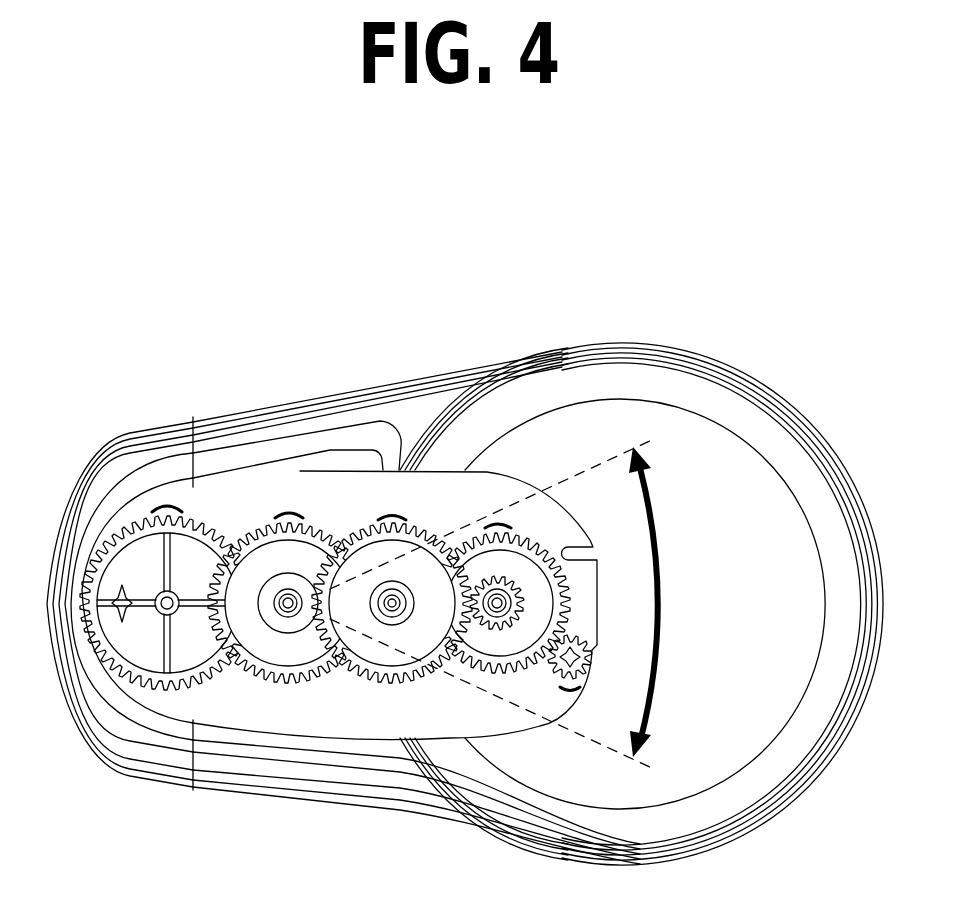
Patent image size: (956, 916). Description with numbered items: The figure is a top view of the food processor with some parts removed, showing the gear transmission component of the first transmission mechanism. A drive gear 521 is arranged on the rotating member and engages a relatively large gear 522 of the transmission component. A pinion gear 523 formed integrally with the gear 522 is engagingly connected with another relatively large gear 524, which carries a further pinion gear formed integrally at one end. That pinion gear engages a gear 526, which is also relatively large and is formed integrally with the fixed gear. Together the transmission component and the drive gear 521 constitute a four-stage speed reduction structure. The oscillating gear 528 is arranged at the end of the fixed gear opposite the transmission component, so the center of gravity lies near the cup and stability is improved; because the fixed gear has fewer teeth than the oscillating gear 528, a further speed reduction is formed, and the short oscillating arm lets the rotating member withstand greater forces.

The drive gear 521 is at (563, 650).
The gear 522 is at (495, 558).
The pinion gear 523 is at (492, 625).
The gear 524 is at (385, 655).
The gear 526 is at (282, 650).
The oscillating gear 528 is at (137, 650).